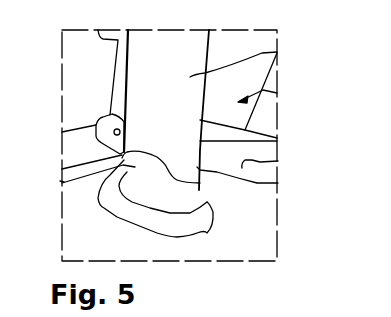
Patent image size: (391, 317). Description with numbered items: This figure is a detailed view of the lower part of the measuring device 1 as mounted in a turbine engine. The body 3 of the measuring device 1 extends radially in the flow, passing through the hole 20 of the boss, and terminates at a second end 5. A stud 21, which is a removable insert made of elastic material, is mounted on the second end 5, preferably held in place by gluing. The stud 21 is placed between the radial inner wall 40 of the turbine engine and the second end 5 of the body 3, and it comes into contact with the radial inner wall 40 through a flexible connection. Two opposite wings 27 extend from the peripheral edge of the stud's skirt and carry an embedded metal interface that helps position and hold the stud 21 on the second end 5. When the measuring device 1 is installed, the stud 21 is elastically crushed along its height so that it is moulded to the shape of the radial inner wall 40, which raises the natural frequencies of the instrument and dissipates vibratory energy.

The measuring device 1 is at (278, 95).
The body 3 is at (278, 52).
The second end 5 is at (278, 183).
The hole 20 is at (70, 168).
The stud 21 is at (215, 208).
The wings 27 is at (60, 181).
The radial inner wall 40 is at (278, 161).